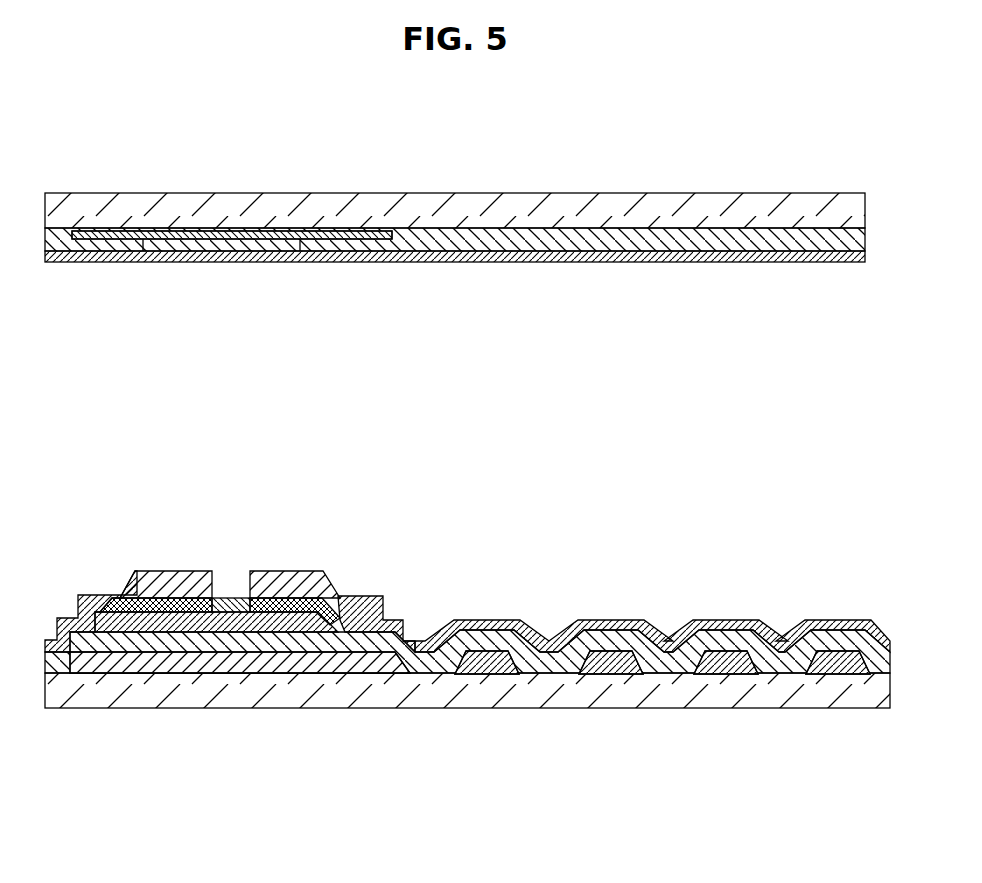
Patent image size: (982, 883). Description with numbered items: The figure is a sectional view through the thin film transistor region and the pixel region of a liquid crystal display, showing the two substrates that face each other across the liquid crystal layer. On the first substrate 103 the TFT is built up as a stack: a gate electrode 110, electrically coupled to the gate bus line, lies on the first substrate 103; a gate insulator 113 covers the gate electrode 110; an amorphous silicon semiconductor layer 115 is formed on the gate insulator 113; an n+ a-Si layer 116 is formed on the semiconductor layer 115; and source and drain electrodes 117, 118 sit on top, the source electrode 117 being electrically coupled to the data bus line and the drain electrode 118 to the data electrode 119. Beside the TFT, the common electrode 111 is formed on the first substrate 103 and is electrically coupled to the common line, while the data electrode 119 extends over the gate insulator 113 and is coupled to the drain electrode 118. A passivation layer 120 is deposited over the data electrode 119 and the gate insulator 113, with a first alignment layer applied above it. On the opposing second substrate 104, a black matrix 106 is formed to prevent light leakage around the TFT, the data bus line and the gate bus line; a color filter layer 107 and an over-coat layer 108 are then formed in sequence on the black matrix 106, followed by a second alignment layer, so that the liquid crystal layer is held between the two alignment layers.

The first substrate 103 is at (775, 692).
The second substrate 104 is at (655, 207).
The black matrix 106 is at (195, 233).
The color filter layer 107 is at (440, 240).
The over-coat layer 108 is at (593, 262).
The gate electrode 110 is at (222, 659).
The common electrode 111 is at (492, 666).
The gate insulator 113 is at (415, 666).
The amorphous silicon semiconductor layer 115 is at (330, 624).
The n+ a-Si layer 116 is at (135, 606).
The source electrode 117 is at (122, 612).
The drain electrode 118 is at (290, 598).
The data electrode 119 is at (718, 628).
The passivation layer 120 is at (376, 597).